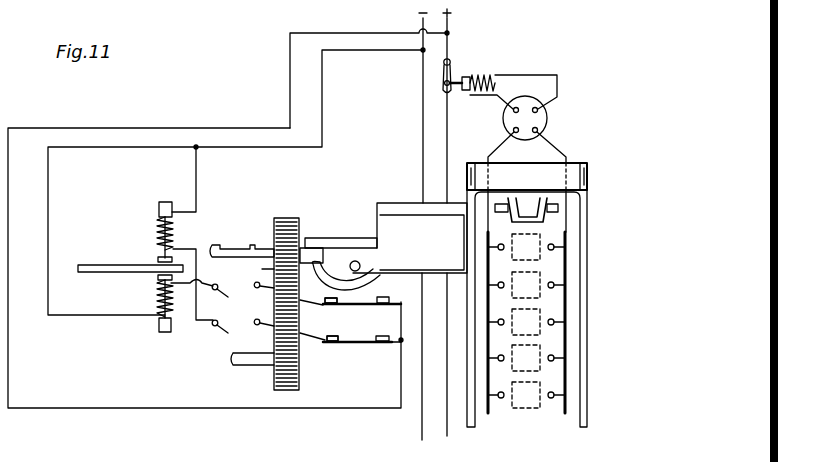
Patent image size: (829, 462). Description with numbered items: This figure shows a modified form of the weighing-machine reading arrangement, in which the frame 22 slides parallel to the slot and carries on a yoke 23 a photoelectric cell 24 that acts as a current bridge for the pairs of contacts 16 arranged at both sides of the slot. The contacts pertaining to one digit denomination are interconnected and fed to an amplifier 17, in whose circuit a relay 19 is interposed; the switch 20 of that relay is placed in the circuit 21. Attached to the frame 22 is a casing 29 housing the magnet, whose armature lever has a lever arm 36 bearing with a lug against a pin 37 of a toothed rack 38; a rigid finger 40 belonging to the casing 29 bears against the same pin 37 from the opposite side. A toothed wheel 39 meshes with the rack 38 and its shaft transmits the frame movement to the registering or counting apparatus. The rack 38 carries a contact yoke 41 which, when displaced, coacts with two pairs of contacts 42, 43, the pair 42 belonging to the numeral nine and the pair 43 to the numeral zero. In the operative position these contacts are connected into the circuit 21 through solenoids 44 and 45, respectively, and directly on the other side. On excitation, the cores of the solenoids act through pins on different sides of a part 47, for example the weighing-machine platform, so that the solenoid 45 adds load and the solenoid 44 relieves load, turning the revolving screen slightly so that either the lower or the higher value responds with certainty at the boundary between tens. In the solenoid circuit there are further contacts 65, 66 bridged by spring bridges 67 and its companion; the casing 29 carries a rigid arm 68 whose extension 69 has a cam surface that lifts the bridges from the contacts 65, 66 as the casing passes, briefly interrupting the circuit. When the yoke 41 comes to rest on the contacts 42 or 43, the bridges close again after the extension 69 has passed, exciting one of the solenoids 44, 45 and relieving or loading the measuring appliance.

The contacts 16 is at (554, 395).
The amplifier 17 is at (548, 118).
The relay 19 is at (497, 80).
The switch 20 is at (452, 66).
The circuit 21 is at (423, 106).
The frame 22 is at (582, 284).
The yoke 23 is at (579, 169).
The photoelectric cell 24 is at (541, 219).
The casing 29 is at (398, 207).
The lever arm 36 is at (346, 238).
The pin 37 is at (310, 250).
The toothed rack 38 is at (286, 222).
The toothed wheel 39 is at (299, 375).
The rigid finger 40 is at (315, 269).
The contact yoke 41 is at (237, 253).
The pair of contacts 42 is at (255, 288).
The pair of contacts 43 is at (255, 324).
The solenoid 44 is at (160, 296).
The solenoid 45 is at (158, 233).
The part 47 is at (90, 267).
The contact 65 is at (387, 303).
The contact 66 is at (345, 345).
The spring bridge 67 is at (330, 304).
The rigid arm 68 is at (372, 265).
The extension 69 is at (366, 257).